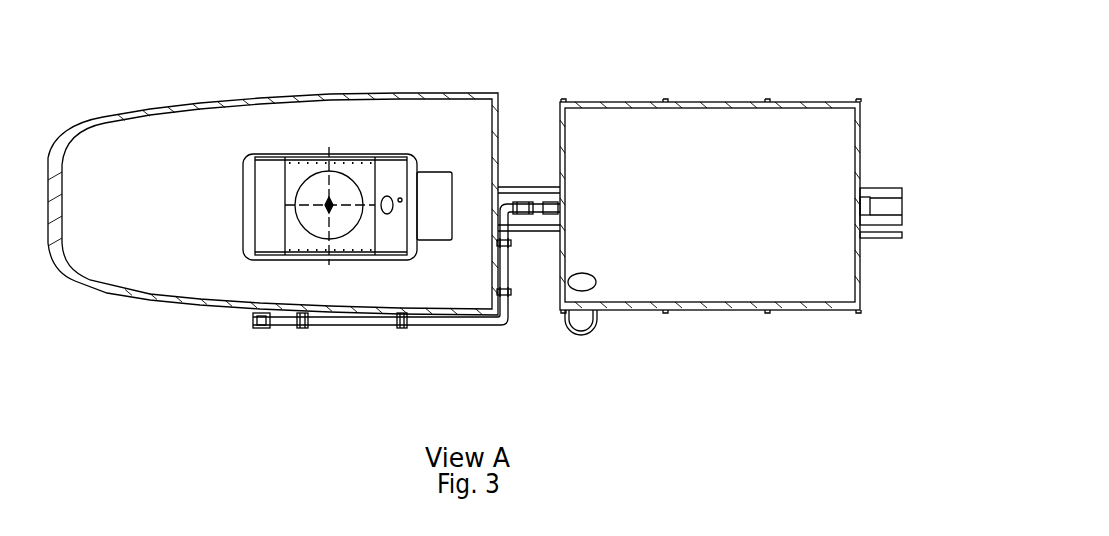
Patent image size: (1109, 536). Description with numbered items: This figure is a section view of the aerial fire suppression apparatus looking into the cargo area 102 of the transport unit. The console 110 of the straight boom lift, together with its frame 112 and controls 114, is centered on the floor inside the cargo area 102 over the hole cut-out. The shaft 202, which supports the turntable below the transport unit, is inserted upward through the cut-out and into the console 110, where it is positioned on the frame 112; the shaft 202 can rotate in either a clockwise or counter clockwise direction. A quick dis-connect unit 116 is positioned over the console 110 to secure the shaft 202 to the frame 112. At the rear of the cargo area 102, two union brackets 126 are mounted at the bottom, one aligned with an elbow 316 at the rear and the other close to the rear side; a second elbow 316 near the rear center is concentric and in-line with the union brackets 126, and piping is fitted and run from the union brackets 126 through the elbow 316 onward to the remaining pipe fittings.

The cargo area 102 is at (447, 123).
The console 110 is at (243, 193).
The frame 112 is at (268, 182).
The controls 114 is at (432, 185).
The quick dis-connect unit 116 is at (295, 186).
The shaft 202 is at (312, 220).
The elbow 316 is at (503, 206).
The union bracket 126 is at (508, 245).